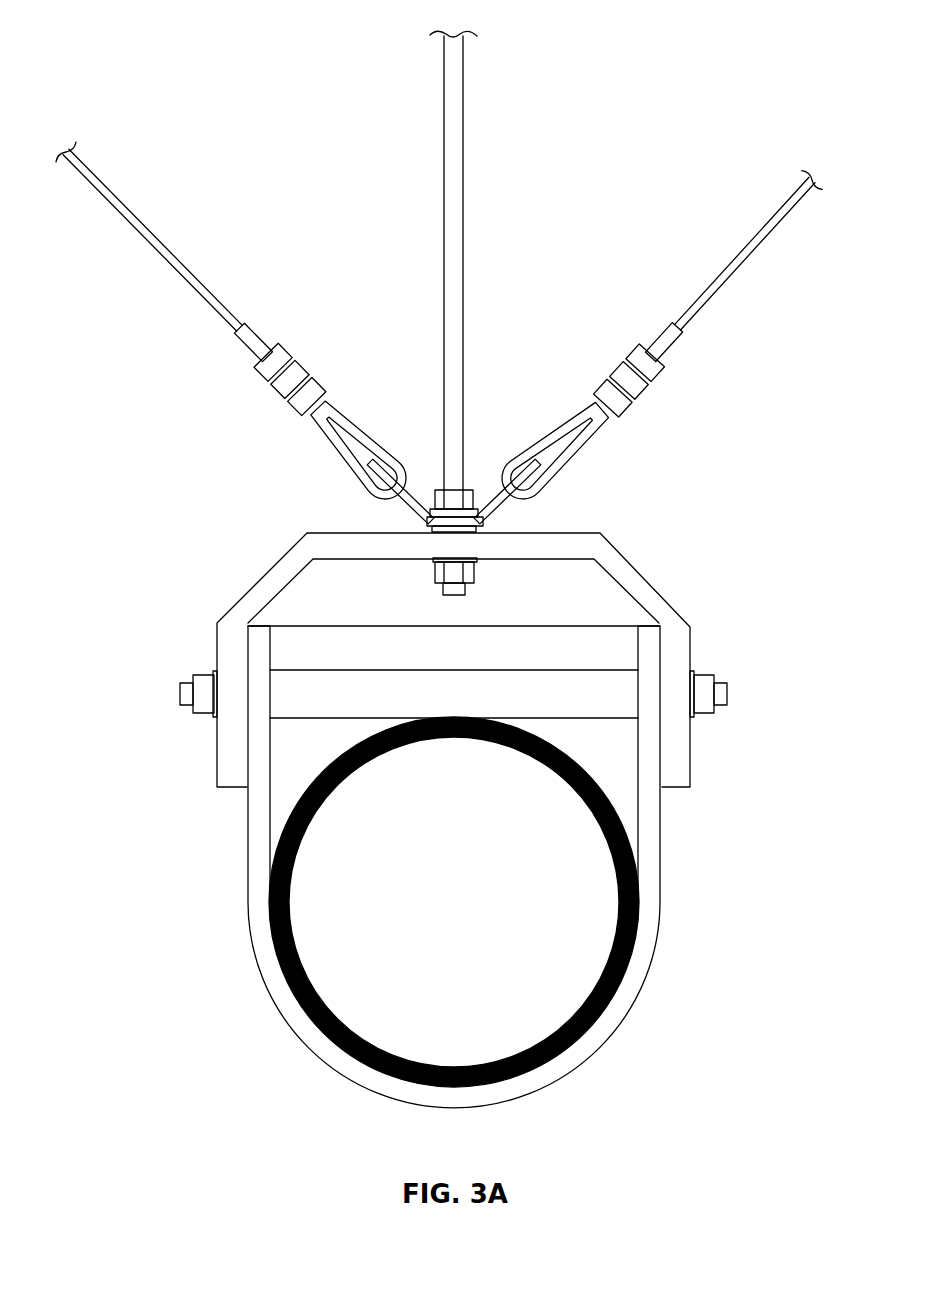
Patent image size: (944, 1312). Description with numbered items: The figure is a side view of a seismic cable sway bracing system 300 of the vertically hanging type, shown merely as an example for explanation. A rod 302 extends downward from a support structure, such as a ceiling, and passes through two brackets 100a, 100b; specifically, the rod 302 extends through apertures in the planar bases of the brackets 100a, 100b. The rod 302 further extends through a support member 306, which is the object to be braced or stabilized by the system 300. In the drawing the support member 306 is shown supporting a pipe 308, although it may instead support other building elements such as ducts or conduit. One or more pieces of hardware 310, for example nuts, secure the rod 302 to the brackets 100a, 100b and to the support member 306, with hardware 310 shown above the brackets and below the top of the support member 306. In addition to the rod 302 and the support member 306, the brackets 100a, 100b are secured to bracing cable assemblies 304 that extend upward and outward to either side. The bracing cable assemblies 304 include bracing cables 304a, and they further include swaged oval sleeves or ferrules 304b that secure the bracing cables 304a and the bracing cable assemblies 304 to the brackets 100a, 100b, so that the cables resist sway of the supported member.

The seismic cable sway bracing system 300 is at (682, 68).
The rod 302 is at (458, 250).
The bracing cable assemblies 304 is at (448, 320).
The bracing cables 304a is at (203, 293).
The swaged oval sleeves or ferrules 304b is at (292, 346).
The bracket 100a is at (428, 516).
The bracket 100b is at (500, 517).
The hardware 310 is at (469, 487).
The support member 306 is at (701, 595).
The pipe 308 is at (597, 1020).